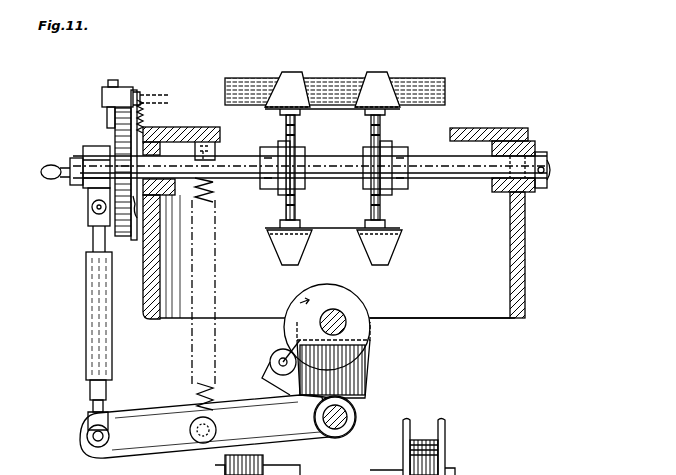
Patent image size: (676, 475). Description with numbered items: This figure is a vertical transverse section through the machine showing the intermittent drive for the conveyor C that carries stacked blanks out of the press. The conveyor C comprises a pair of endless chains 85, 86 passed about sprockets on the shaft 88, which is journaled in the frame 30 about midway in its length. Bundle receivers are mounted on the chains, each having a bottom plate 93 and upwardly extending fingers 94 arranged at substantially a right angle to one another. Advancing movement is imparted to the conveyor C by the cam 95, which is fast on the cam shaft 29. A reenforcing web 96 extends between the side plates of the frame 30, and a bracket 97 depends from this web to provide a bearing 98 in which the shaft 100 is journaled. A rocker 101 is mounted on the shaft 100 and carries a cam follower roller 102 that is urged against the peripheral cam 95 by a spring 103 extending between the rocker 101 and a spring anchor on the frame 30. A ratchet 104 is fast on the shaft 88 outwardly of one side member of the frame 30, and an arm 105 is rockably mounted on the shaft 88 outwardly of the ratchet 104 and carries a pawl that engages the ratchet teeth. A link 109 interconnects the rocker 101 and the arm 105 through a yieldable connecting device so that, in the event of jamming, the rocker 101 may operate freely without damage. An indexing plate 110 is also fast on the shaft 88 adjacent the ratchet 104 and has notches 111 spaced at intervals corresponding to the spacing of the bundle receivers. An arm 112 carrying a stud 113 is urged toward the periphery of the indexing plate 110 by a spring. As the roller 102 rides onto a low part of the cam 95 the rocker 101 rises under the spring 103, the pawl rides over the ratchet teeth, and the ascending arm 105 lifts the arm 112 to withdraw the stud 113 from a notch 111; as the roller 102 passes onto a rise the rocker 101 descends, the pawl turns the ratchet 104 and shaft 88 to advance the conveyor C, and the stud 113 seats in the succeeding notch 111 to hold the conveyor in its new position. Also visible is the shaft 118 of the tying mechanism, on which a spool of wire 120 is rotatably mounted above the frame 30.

The cam shaft 29 is at (345, 315).
The frame 30 is at (527, 312).
The endless chain 85 is at (386, 208).
The endless chain 86 is at (286, 208).
The shaft 88 is at (310, 167).
The bottom plate 93 is at (325, 112).
The upwardly extending fingers 94 is at (385, 75).
The cam 95 is at (303, 304).
The reenforcing web 96 is at (432, 318).
The bracket 97 is at (368, 370).
The bearing 98 is at (352, 425).
The shaft 100 is at (353, 407).
The rocker 101 is at (168, 402).
The cam follower roller 102 is at (272, 350).
The spring 103 is at (195, 385).
The ratchet 104 is at (116, 137).
The arm 105 is at (90, 147).
The link 109 is at (90, 388).
The indexing plate 110 is at (129, 169).
The notches 111 is at (150, 161).
The arm 112 is at (108, 115).
The stud 113 is at (138, 113).
The shaft 118 is at (348, 472).
The spool of wire 120 is at (447, 428).
The conveyor C is at (388, 124).